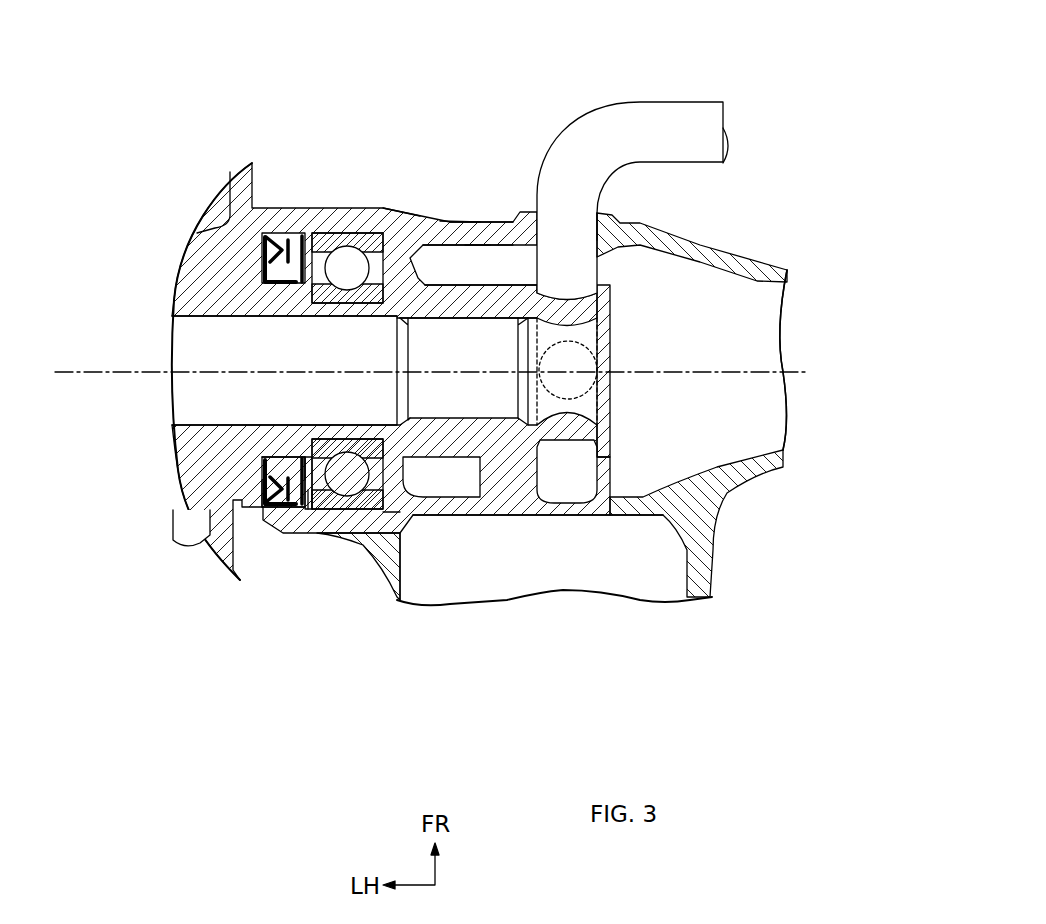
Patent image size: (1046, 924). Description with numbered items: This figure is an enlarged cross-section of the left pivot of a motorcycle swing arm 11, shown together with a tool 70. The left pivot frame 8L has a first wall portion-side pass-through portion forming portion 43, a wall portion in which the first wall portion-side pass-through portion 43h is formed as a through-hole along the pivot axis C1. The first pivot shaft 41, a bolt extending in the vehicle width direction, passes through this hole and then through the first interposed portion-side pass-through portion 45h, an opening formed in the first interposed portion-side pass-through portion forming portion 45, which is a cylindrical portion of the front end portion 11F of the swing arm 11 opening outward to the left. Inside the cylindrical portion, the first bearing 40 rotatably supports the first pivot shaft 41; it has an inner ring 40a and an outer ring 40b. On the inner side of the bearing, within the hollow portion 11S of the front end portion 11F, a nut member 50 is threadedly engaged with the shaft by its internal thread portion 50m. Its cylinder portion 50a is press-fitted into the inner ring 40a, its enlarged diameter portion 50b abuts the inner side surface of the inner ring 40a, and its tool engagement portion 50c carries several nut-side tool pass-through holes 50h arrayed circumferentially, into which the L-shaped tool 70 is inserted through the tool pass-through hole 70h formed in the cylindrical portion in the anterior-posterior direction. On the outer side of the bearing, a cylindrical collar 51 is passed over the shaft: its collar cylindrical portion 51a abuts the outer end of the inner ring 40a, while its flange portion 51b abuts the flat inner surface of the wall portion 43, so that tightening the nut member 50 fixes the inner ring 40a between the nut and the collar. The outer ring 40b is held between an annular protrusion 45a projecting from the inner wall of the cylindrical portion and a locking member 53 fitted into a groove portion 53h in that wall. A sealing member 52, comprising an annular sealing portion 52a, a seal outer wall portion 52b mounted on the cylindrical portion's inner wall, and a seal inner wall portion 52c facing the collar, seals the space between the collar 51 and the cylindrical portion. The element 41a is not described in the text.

The pivot axis C1 is at (100, 371).
The first pivot shaft 41 is at (200, 313).
The first wall portion-side pass-through portion 43h is at (178, 333).
The first bearing 40 is at (515, 103).
The inner ring 40a is at (432, 222).
The outer ring 40b is at (392, 210).
The first interposed portion-side pass-through portion 45h is at (481, 252).
The sealing member 52 is at (372, 58).
The annular sealing portion 52a is at (278, 234).
The seal outer wall portion 52b is at (285, 237).
The seal inner wall portion 52c is at (302, 243).
The first interposed portion-side pass-through portion forming portion 45 is at (295, 527).
The housing inner boss 41a is at (477, 317).
The first wall portion-side pass-through portion forming portion 43 is at (185, 428).
The internal thread portion 50m is at (457, 420).
The nut member 50 is at (580, 678).
The annular protrusion 45a is at (404, 481).
The cylinder portion 50a is at (403, 558).
The enlarged diameter portion 50b is at (513, 457).
The tool engagement portion 50c is at (607, 462).
The nut-side tool pass-through hole 50h is at (577, 297).
The left pivot frame 8L is at (200, 545).
The collar 51 is at (72, 427).
The collar cylindrical portion 51a is at (280, 457).
The flange portion 51b is at (265, 480).
The locking member 53 is at (320, 500).
The groove portion 53h is at (318, 513).
The tool 70 is at (678, 102).
The tool pass-through hole 70h is at (592, 220).
The front end portion 11F is at (725, 250).
The swing arm 11 is at (783, 360).
The hollow portion 11S is at (712, 338).